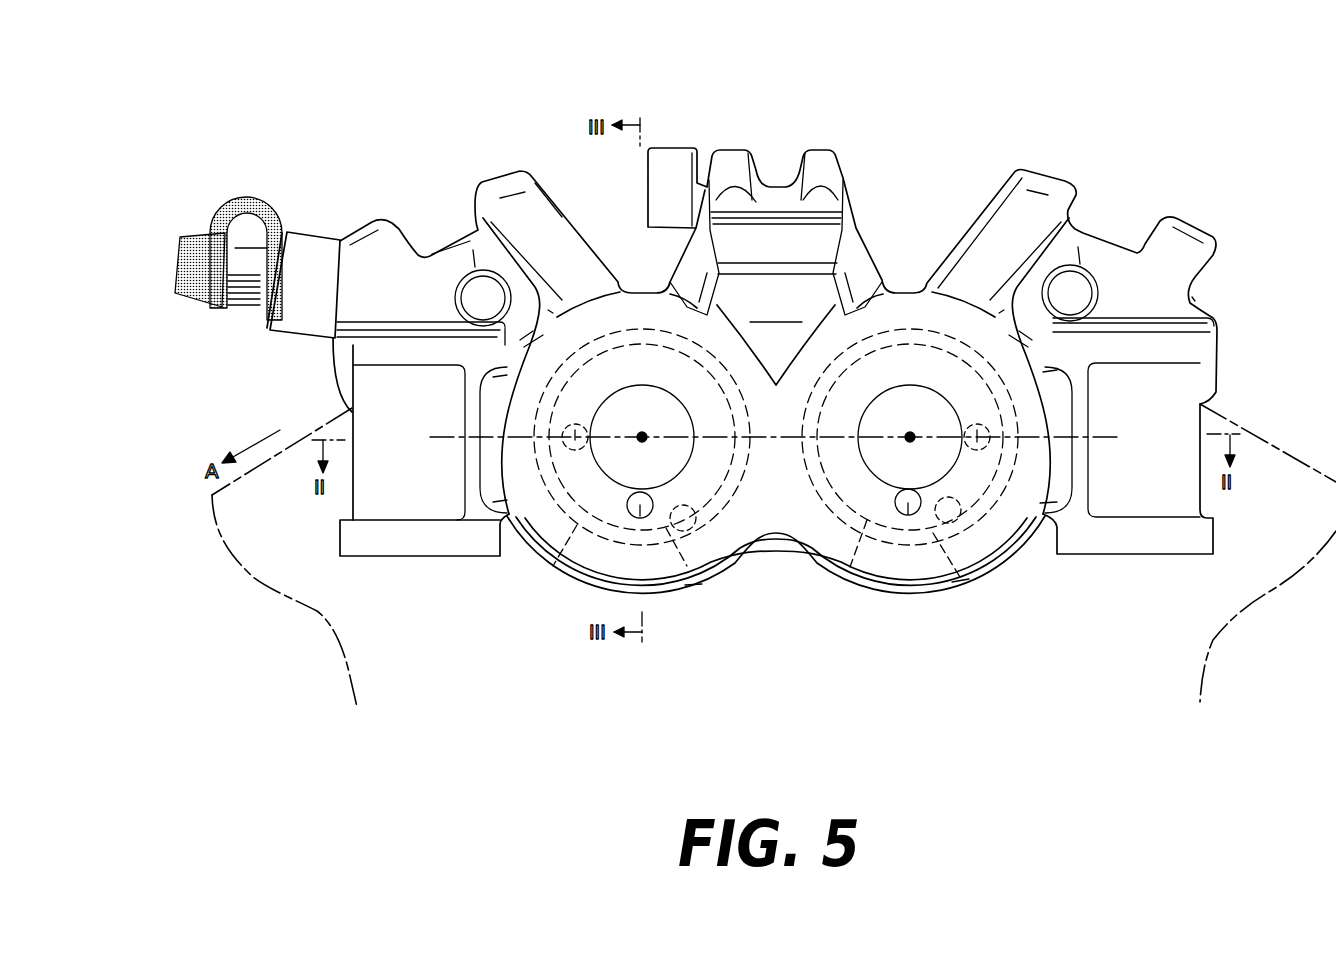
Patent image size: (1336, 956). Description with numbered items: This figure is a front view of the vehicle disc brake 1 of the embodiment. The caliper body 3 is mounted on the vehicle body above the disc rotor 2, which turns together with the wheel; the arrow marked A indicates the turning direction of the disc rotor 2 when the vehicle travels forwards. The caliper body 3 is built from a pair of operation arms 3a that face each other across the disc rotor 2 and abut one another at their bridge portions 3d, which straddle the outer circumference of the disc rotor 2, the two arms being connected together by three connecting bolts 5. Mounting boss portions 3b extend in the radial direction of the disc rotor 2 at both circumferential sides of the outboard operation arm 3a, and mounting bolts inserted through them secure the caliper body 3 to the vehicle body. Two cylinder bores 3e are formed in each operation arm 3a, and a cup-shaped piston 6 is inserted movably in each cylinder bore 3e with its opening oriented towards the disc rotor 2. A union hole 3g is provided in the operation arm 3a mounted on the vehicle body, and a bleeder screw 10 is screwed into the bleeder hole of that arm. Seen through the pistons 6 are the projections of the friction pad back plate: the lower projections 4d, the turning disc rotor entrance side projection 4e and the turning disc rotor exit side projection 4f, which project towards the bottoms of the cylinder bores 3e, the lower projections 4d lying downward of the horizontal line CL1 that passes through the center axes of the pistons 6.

The vehicle disc brake 1 is at (766, 70).
The disc rotor 2 is at (1293, 458).
The caliper body 3 is at (1043, 158).
The operation arm 3a is at (916, 570).
The mounting boss portion 3b is at (338, 358).
The bridge portion 3d is at (847, 195).
The cylinder bore 3e is at (694, 586).
The union hole 3g is at (768, 220).
The lower projection 4d is at (636, 517).
The turning disc rotor entrance side projection 4e is at (579, 426).
The turning disc rotor exit side projection 4f is at (986, 421).
The connecting bolt 5 is at (465, 295).
The piston 6 is at (556, 570).
The bleeder screw 10 is at (238, 300).
The horizontal line CL1 is at (1112, 435).